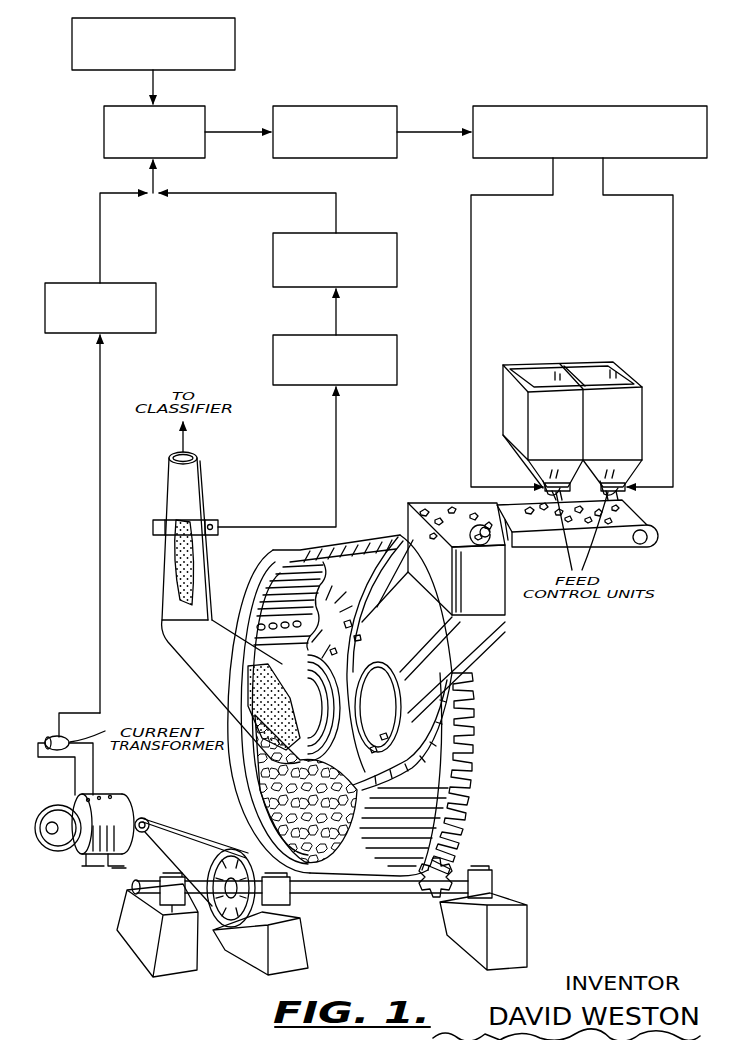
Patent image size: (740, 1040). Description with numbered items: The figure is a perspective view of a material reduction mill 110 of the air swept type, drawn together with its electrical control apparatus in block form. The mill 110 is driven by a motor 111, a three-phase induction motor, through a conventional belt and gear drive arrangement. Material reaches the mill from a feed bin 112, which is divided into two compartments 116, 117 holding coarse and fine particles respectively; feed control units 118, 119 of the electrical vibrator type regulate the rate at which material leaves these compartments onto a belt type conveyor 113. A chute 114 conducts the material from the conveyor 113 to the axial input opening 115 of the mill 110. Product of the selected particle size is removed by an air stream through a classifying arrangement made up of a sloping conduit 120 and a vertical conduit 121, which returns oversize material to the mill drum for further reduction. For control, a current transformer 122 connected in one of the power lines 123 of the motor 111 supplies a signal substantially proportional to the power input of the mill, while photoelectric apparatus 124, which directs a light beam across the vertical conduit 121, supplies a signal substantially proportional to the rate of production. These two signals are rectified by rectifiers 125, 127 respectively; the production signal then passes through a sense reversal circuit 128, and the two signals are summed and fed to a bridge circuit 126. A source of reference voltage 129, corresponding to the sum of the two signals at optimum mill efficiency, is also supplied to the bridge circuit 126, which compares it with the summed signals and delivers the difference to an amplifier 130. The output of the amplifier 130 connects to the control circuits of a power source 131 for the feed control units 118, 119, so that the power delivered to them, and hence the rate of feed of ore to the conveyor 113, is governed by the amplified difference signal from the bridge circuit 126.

The material reduction mill 110 is at (418, 800).
The motor 111 is at (102, 812).
The feed bin 112 is at (610, 414).
The belt type conveyor 113 is at (650, 547).
The chute 114 is at (480, 640).
The axial input opening 115 is at (395, 715).
The compartment 116 is at (528, 372).
The compartment 117 is at (597, 372).
The feed control unit 118 is at (500, 486).
The feed control unit 119 is at (648, 486).
The sloping conduit 120 is at (190, 626).
The vertical conduit 121 is at (198, 485).
The current transformer 122 is at (52, 737).
The power lines 123 is at (38, 758).
The photoelectric apparatus 124 is at (219, 523).
The rectifier 125 is at (157, 309).
The bridge circuit 126 is at (103, 124).
The rectifier 127 is at (398, 359).
The sense reversal circuit 128 is at (272, 262).
The source of reference voltage 129 is at (236, 44).
The amplifier 130 is at (336, 106).
The power source 131 is at (577, 106).